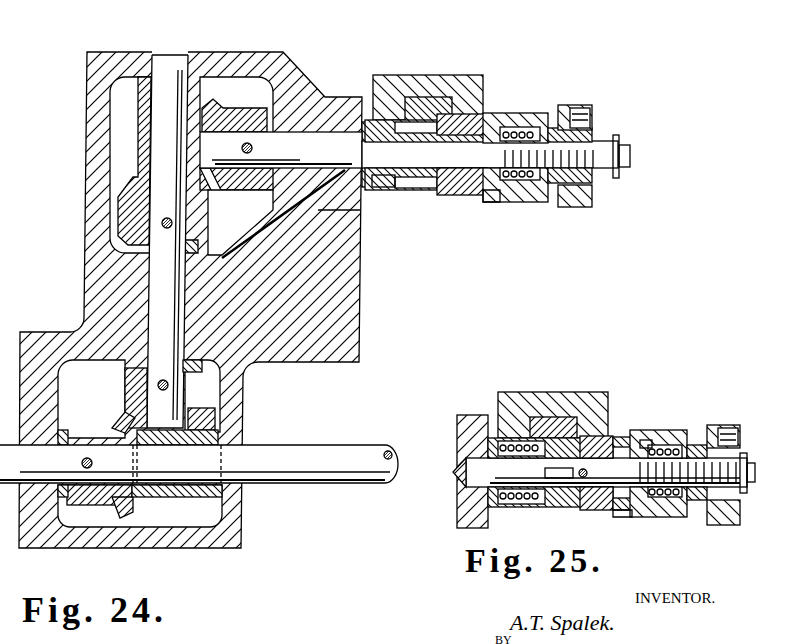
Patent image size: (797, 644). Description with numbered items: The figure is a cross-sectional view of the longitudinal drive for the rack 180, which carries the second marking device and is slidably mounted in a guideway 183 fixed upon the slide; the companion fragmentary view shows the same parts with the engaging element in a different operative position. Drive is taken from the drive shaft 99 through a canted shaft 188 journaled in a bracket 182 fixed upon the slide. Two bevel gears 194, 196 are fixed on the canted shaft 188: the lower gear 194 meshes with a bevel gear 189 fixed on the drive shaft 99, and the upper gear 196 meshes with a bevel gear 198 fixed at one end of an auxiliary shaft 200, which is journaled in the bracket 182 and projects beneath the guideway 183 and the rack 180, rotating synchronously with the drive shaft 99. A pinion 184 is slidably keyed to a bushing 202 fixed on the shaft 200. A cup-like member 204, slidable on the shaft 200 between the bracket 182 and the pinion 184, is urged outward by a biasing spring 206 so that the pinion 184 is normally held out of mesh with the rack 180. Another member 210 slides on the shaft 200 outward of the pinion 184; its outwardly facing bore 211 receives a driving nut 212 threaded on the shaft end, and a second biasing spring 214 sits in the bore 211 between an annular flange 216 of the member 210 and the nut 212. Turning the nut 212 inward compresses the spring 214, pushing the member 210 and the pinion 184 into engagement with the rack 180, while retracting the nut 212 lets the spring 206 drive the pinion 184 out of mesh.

In FIG. 24, the drive shaft 99 is at (290, 450).
In FIG. 24, the rack 180 is at (445, 100).
In FIG. 24, the bracket 182 is at (90, 115).
In FIG. 24, the guideway 183 is at (390, 75).
In FIG. 25, the guideway 183 is at (527, 392).
In FIG. 24, the pinion 184 is at (440, 190).
In FIG. 25, the pinion 184 is at (607, 437).
In FIG. 24, the canted shaft 188 is at (175, 317).
In FIG. 24, the bevel gear 189 is at (77, 427).
In FIG. 24, the bevel gear 194 is at (200, 397).
In FIG. 24, the bevel gear 196 is at (133, 218).
In FIG. 24, the bevel gear 198 is at (237, 113).
In FIG. 24, the auxiliary shaft 200 is at (310, 157).
In FIG. 25, the auxiliary shaft 200 is at (463, 477).
In FIG. 24, the bushing 202 is at (467, 187).
In FIG. 25, the bushing 202 is at (573, 497).
In FIG. 24, the cup-like member 204 is at (400, 187).
In FIG. 25, the cup-like member 204 is at (545, 473).
In FIG. 24, the biasing spring 206 is at (357, 125).
In FIG. 24, the member 210 is at (532, 207).
In FIG. 25, the member 210 is at (687, 518).
In FIG. 25, the outwardly facing bore 211 is at (667, 440).
In FIG. 24, the driving nut 212 is at (593, 130).
In FIG. 25, the driving nut 212 is at (712, 442).
In FIG. 24, the biasing spring 214 is at (522, 128).
In FIG. 25, the biasing spring 214 is at (670, 448).
In FIG. 24, the annular flange 216 is at (508, 197).
In FIG. 25, the annular flange 216 is at (643, 510).